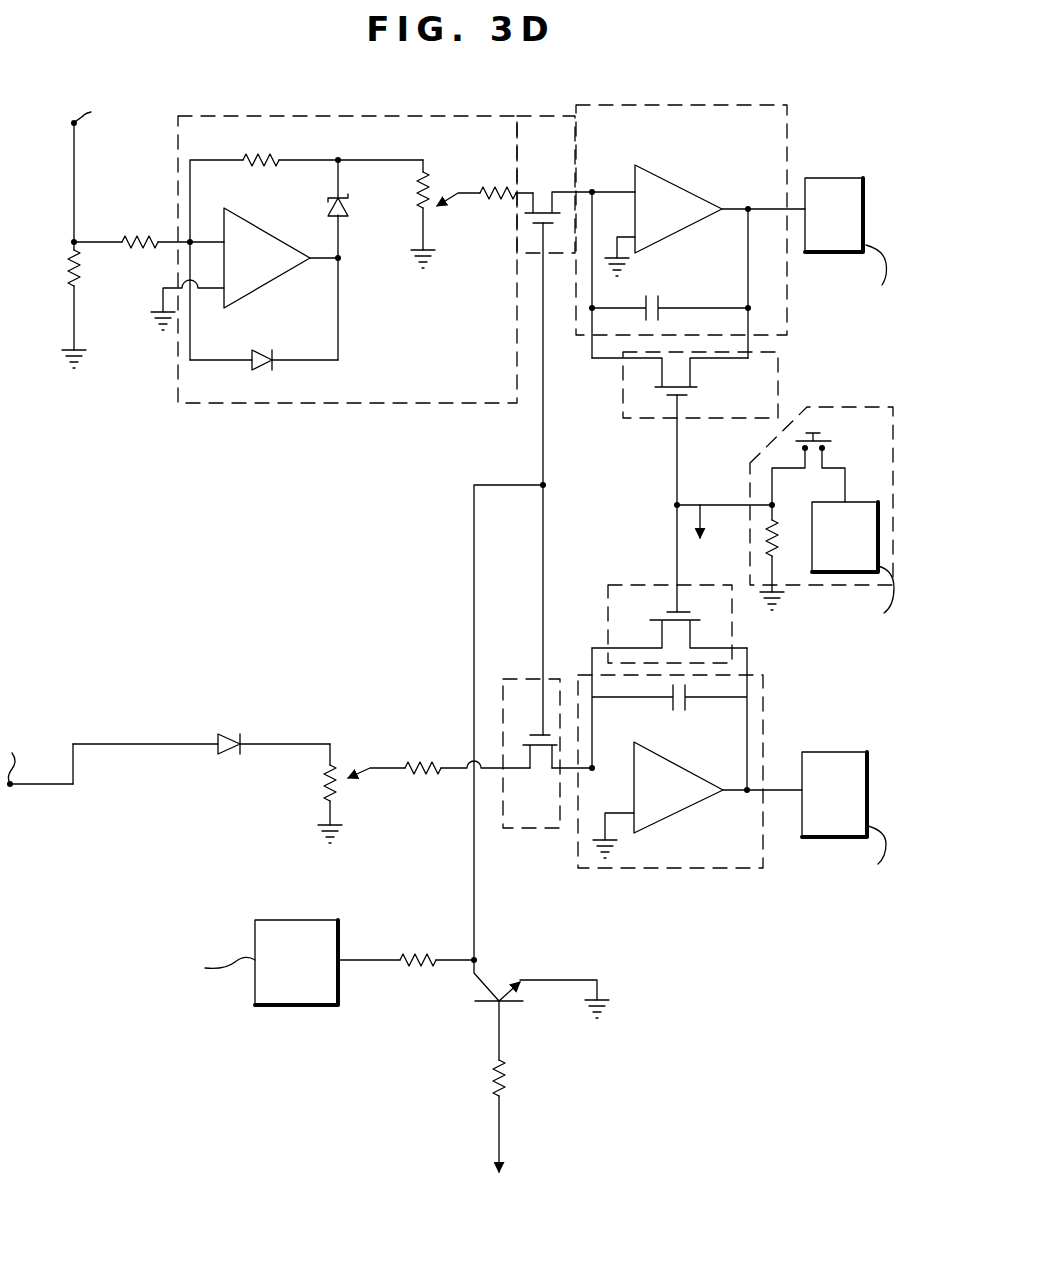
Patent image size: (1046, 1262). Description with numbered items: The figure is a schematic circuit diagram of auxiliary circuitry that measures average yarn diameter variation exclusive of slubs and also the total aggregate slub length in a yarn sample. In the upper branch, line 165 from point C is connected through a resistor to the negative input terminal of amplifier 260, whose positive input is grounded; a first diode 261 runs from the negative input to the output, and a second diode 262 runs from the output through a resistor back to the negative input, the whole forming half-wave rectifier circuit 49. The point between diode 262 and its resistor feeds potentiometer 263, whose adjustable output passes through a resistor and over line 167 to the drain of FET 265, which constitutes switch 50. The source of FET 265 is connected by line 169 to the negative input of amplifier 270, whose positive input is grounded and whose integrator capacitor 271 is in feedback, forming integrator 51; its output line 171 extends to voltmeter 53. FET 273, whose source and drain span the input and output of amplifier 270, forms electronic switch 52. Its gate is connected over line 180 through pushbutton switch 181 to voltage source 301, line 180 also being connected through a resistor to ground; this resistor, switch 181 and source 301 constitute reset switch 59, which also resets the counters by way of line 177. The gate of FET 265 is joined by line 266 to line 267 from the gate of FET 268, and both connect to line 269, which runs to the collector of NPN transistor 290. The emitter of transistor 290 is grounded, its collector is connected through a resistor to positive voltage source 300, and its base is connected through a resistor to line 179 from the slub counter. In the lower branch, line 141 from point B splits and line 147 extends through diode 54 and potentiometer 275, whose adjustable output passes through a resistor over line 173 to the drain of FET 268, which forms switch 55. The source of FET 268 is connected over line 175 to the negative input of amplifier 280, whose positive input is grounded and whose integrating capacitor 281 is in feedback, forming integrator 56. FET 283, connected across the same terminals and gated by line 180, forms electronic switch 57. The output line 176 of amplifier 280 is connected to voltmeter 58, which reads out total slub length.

The half-wave rectifier circuit 49 is at (290, 116).
The switch 50 is at (540, 115).
The integrator circuit 51 is at (655, 105).
The electronic switch 52 is at (778, 393).
The voltmeter 53 is at (841, 235).
The diode 54 is at (234, 729).
The switch 55 is at (505, 828).
The integrator circuit 56 is at (690, 868).
The electronic switch 57 is at (732, 630).
The voltmeter 58 is at (838, 814).
The reset switch 59 is at (893, 500).
The line 141 is at (33, 786).
The line 147 is at (118, 744).
The line 165 is at (76, 176).
The line 167 is at (529, 192).
The line 169 is at (590, 190).
The output line 171 is at (760, 206).
The line 173 is at (442, 772).
The line 175 is at (570, 772).
The output line 176 is at (750, 788).
The line 177 is at (704, 522).
The line 179 is at (501, 1136).
The line 180 is at (721, 496).
The pushbutton switch 181 is at (828, 452).
The amplifier 260 is at (287, 257).
The first diode 261 is at (262, 350).
The second diode 262 is at (348, 206).
The potentiometer 263 is at (428, 186).
The FET 265 is at (547, 175).
The line 266 is at (545, 416).
The line 267 is at (545, 546).
The FET 268 is at (524, 738).
The line 269 is at (472, 586).
The amplifier 270 is at (676, 220).
The integrator capacitor 271 is at (666, 306).
The FET 273 is at (702, 390).
The potentiometer 275 is at (340, 768).
The amplifier 280 is at (670, 800).
The integrating capacitor 281 is at (680, 712).
The FET 283 is at (665, 616).
The transistor 290 is at (508, 967).
The positive voltage source 300 is at (306, 962).
The voltage source 301 is at (845, 537).